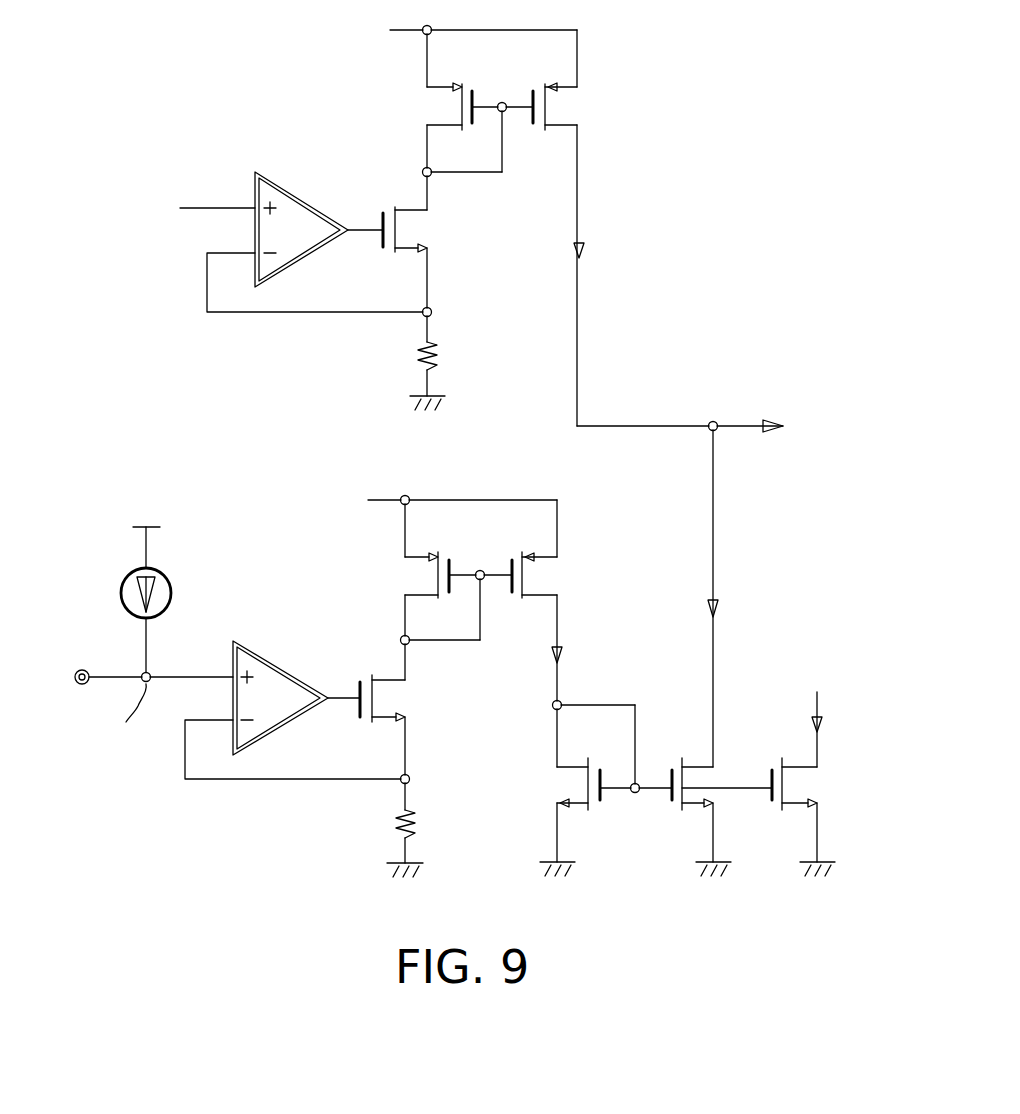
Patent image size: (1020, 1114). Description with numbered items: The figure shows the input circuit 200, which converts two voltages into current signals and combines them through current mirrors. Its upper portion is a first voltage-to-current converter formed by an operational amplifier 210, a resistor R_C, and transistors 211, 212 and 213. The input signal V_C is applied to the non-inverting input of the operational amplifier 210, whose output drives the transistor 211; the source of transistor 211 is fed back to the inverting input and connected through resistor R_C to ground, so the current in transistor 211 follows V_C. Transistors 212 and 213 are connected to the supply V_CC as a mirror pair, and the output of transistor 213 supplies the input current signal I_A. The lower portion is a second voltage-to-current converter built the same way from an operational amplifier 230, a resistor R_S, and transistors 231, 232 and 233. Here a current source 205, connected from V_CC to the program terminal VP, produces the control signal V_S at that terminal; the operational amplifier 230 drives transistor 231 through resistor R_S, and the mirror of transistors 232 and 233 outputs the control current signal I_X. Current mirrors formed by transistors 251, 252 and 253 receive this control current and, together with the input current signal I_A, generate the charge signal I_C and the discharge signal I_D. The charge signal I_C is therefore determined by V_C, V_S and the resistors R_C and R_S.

The input circuit 200 is at (822, 32).
The current source 205 is at (118, 596).
The operational amplifier 210 is at (300, 192).
The transistor 211 is at (430, 230).
The transistor 212 is at (431, 106).
The transistor 213 is at (580, 107).
The operational amplifier 230 is at (280, 661).
The transistor 231 is at (408, 697).
The transistor 232 is at (406, 578).
The transistor 233 is at (553, 573).
The transistor 251 is at (560, 786).
The transistor 252 is at (676, 812).
The transistor 253 is at (820, 787).